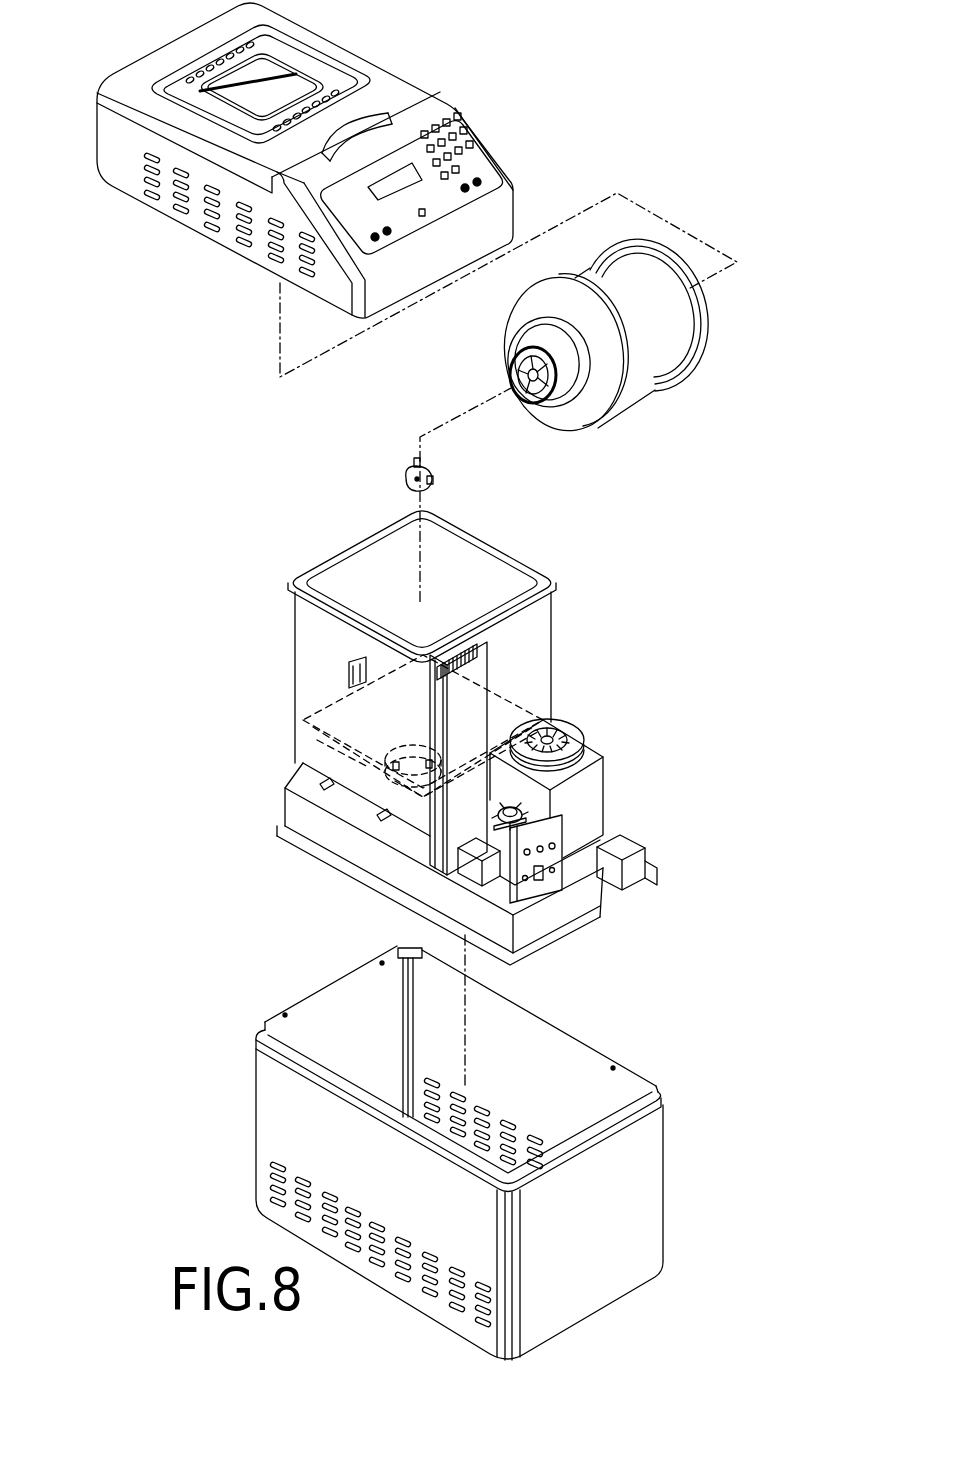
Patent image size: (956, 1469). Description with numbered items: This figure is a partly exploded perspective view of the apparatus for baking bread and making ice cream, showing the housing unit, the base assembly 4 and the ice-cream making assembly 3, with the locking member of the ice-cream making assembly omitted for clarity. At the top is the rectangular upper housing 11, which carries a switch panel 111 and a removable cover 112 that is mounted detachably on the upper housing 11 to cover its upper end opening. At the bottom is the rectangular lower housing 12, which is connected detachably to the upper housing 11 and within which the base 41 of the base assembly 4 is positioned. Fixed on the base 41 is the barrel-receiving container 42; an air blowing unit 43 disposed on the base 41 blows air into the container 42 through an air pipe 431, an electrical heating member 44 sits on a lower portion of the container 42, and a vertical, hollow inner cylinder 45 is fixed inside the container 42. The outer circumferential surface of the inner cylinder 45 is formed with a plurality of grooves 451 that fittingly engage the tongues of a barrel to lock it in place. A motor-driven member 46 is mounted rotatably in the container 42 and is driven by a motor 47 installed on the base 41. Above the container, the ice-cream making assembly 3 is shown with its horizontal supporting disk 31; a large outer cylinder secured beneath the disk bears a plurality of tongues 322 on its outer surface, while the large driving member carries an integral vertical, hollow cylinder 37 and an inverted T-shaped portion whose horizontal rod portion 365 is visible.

The upper housing 11 is at (505, 220).
The switch panel 111 is at (467, 140).
The removable cover 112 is at (392, 88).
The lower housing 12 is at (653, 1143).
The ice-cream making assembly 3 is at (671, 392).
The horizontal supporting disk 31 is at (618, 420).
The tongues 322 is at (537, 400).
The horizontal rod portion 365 is at (527, 407).
The vertical hollow cylinder 37 is at (528, 338).
The base assembly 4 is at (617, 823).
The base 41 is at (652, 890).
The barrel-receiving container 42 is at (538, 677).
The air pipe 431 is at (480, 660).
The air blowing unit 43 is at (473, 870).
The electrical heating member 44 is at (307, 720).
The inner cylinder 45 is at (365, 795).
The grooves 451 is at (390, 775).
The motor-driven member 46 is at (403, 473).
The motor 47 is at (593, 783).